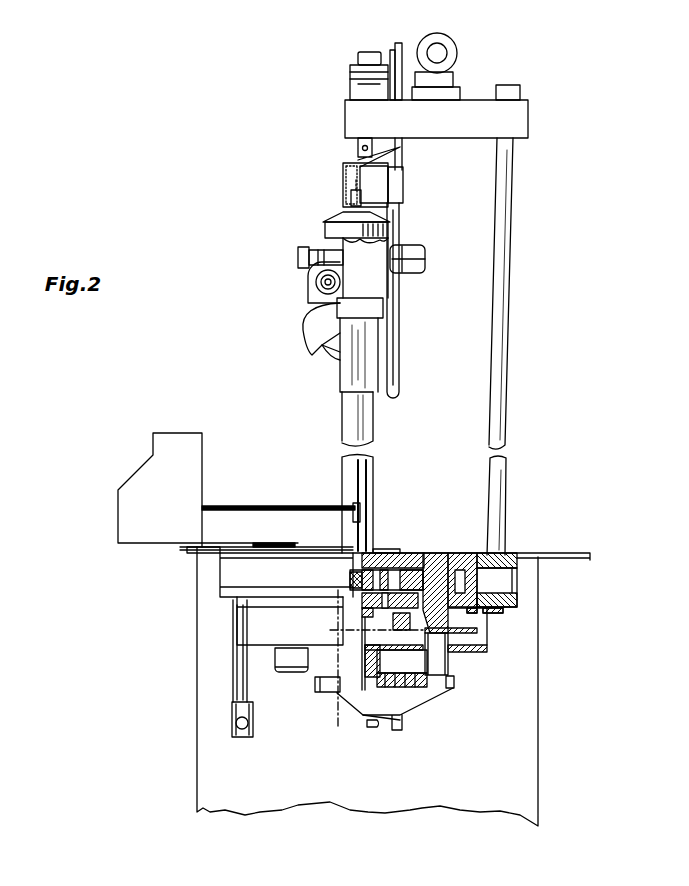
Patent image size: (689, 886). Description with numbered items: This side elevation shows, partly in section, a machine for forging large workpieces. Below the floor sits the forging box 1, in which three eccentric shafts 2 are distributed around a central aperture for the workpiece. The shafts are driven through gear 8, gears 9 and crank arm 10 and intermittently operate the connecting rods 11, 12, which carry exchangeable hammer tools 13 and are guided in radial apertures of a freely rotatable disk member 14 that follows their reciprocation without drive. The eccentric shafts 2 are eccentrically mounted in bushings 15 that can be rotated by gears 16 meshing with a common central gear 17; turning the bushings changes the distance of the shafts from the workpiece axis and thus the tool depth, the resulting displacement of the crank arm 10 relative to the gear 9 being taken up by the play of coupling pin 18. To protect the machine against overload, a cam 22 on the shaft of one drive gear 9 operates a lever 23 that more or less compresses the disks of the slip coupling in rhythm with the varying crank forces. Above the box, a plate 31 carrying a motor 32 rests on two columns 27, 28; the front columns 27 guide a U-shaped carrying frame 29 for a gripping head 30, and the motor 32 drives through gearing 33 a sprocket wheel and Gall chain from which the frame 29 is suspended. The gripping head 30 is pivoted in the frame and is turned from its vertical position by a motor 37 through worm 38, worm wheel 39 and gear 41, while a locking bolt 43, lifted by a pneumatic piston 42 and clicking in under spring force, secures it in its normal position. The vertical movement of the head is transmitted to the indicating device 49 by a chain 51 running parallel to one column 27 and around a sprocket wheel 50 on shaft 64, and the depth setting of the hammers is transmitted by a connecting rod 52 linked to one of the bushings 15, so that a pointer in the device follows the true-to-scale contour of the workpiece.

The forging box 1 is at (232, 592).
The eccentric shafts 2 is at (440, 553).
The gear 8 is at (363, 654).
The gears 9 is at (470, 647).
The crank arm 10 is at (420, 681).
The connecting rod 11 is at (517, 583).
The connecting rod 12 is at (400, 552).
The hammer tools 13 is at (350, 582).
The disk member 14 is at (368, 601).
The bushings 15 is at (470, 553).
The gears 16 is at (500, 629).
The central gear 17 is at (363, 632).
The coupling pin 18 is at (427, 657).
The cam 22 is at (455, 685).
The lever 23 is at (371, 728).
The front columns 27 is at (373, 447).
The column 28 is at (505, 452).
The carrying frame 29 is at (350, 168).
The gripping head 30 is at (328, 230).
The plate 31 is at (441, 128).
The motor 32 is at (454, 50).
The gearing 33 is at (368, 52).
The motor 37 is at (425, 254).
The worm 38 is at (322, 258).
The worm wheel 39 is at (312, 283).
The gear 41 is at (333, 361).
The pneumatic piston 42 is at (405, 182).
The locking bolt 43 is at (351, 200).
The indicating device 49 is at (196, 464).
The sprocket wheel 50 is at (366, 516).
The chain 51 is at (350, 474).
The connecting rod 52 is at (232, 544).
The shaft 64 is at (270, 506).